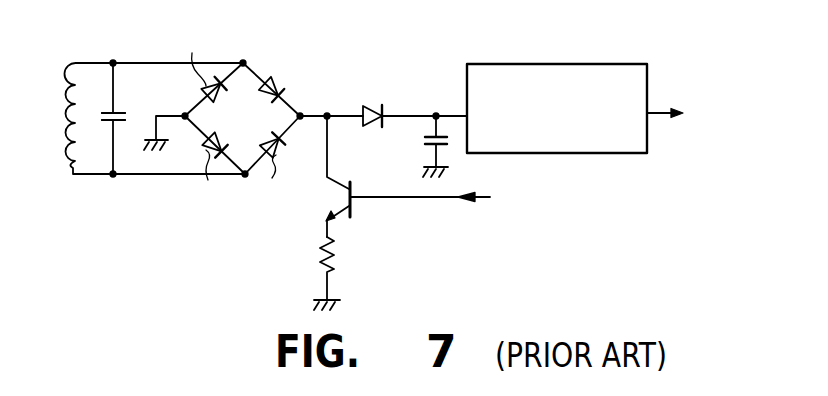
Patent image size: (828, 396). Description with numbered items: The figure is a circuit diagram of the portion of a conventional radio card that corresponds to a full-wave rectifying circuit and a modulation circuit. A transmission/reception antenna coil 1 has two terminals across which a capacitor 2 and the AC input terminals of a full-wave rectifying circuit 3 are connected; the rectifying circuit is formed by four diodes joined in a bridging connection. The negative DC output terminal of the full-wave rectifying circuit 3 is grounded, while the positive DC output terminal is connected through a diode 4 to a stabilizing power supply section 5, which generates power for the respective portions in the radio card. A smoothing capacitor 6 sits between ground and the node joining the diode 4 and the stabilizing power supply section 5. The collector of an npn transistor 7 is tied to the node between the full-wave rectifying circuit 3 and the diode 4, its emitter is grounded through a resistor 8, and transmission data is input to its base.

The transmission/reception antenna coil 1 is at (66, 144).
The capacitor 2 is at (122, 112).
The full-wave rectifying circuit 3 is at (262, 80).
The diode 4 is at (374, 104).
The stabilizing power supply section 5 is at (467, 83).
The smoothing capacitor 6 is at (424, 141).
The npn transistor 7 is at (323, 206).
The resistor 8 is at (339, 256).